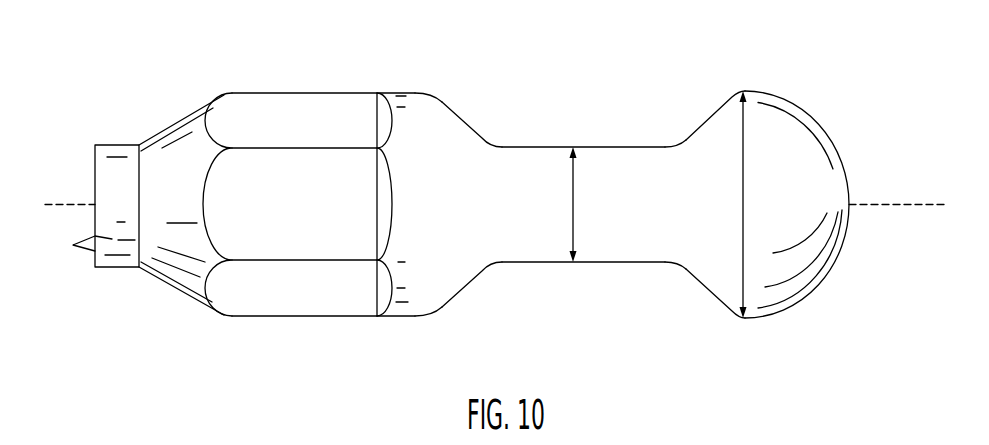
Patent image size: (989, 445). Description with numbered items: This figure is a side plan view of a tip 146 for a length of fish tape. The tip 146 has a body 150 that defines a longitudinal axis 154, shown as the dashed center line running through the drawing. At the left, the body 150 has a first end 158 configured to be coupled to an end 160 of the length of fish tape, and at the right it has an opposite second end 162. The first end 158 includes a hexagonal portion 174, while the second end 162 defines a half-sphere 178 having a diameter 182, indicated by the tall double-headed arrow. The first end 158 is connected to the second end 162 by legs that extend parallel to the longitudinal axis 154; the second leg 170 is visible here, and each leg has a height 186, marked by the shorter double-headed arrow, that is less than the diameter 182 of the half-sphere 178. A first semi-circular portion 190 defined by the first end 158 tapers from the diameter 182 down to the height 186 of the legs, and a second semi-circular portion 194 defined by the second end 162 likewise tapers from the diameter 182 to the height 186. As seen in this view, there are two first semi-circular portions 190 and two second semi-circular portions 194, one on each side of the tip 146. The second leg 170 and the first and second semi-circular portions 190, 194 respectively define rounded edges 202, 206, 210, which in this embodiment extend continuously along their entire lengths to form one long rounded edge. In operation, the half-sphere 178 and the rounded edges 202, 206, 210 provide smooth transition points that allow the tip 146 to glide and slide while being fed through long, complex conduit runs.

The tip 146 is at (245, 70).
The body 150 is at (402, 305).
The longitudinal axis 154 is at (890, 204).
The first end 158 is at (185, 268).
The end of the fish tape 160 is at (118, 268).
The second end 162 is at (823, 204).
The second leg 170 is at (583, 212).
The hexagonal portion 174 is at (296, 303).
The half-sphere 178 is at (835, 163).
The diameter 182 is at (745, 155).
The height 186 is at (575, 205).
The first semi-circular portion 190 is at (448, 103).
The second semi-circular portion 194 is at (716, 104).
The rounded edge 202 is at (534, 147).
The rounded edge 206 is at (460, 121).
The rounded edge 210 is at (697, 128).